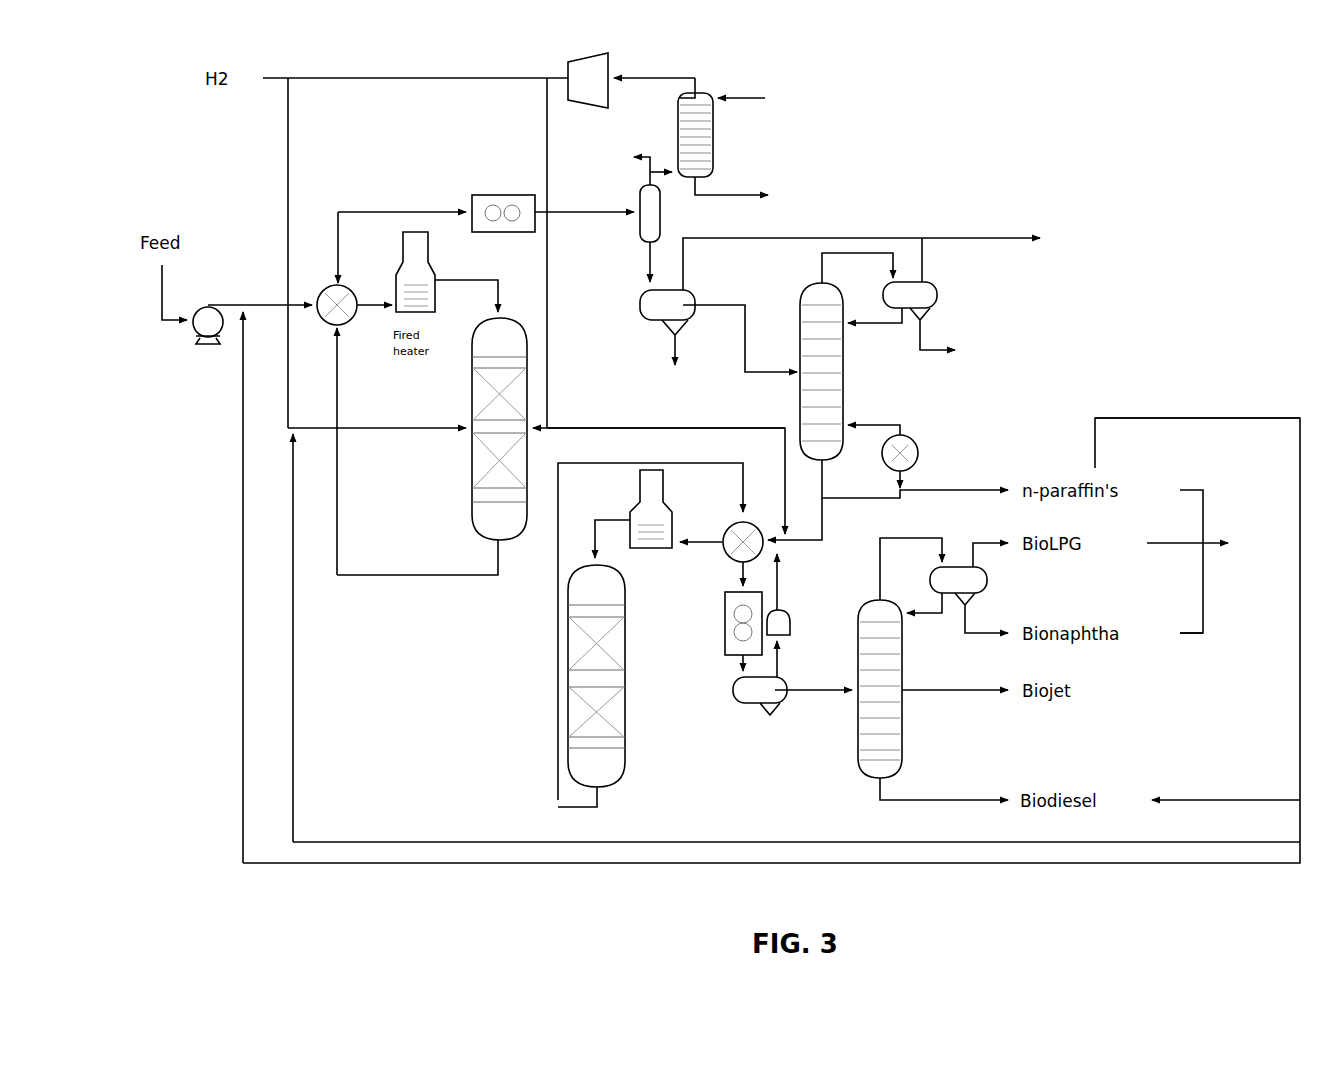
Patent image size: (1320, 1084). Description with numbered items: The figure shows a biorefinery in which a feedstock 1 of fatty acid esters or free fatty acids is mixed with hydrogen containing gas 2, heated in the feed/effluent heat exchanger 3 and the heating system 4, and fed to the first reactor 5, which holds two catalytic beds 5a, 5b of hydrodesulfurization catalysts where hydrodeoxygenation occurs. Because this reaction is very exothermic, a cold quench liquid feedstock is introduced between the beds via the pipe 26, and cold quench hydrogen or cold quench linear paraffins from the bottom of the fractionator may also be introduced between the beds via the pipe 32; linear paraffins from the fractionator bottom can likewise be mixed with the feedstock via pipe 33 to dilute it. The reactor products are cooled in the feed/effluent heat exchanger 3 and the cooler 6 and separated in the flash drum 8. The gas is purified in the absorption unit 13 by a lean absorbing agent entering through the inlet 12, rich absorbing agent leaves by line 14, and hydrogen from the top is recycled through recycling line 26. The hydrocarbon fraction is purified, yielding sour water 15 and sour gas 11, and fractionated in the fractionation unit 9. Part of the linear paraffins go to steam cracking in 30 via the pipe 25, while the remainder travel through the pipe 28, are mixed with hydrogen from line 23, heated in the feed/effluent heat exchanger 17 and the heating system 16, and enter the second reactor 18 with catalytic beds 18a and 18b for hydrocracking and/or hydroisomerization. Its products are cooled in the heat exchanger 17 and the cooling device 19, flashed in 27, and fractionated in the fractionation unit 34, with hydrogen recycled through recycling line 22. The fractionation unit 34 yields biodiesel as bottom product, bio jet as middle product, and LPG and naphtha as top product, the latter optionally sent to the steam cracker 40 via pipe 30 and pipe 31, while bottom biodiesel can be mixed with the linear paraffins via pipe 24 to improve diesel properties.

The feedstock 1 is at (157, 315).
The hydrogen containing gas 2 is at (285, 140).
The feed/effluent heat exchanger 3 is at (325, 322).
The heating system 4 is at (412, 258).
The first reactor 5 is at (432, 446).
The catalytic bed 5a is at (480, 395).
The catalytic bed 5b is at (480, 478).
The cooler 6 is at (488, 195).
The flash drum 8 is at (640, 222).
The fractionation unit 9 is at (838, 395).
The sour gas 11 is at (990, 236).
The inlet 12 is at (752, 92).
The absorption unit 13 is at (708, 140).
The line 14 is at (735, 190).
The sour water 15 is at (670, 360).
The heating system 16 is at (650, 505).
The feed/effluent heat exchanger 17 is at (728, 558).
The second reactor 18 is at (555, 686).
The catalytic bed 18a is at (575, 645).
The catalytic bed 18b is at (575, 708).
The cooling device 19 is at (725, 635).
The recycling line 22 is at (785, 560).
The line 23 is at (575, 426).
The pipe 24 is at (1265, 412).
The pipe 25 is at (1195, 490).
The recycling line 26 is at (622, 78).
The flash 27 is at (752, 712).
The pipe 28 is at (785, 480).
The pipe 30 is at (1170, 545).
The pipe 31 is at (1190, 640).
The pipe 32 is at (365, 842).
The pipe 33 is at (240, 572).
The fractionation unit 34 is at (870, 768).
The steam cracker 40 is at (1245, 546).